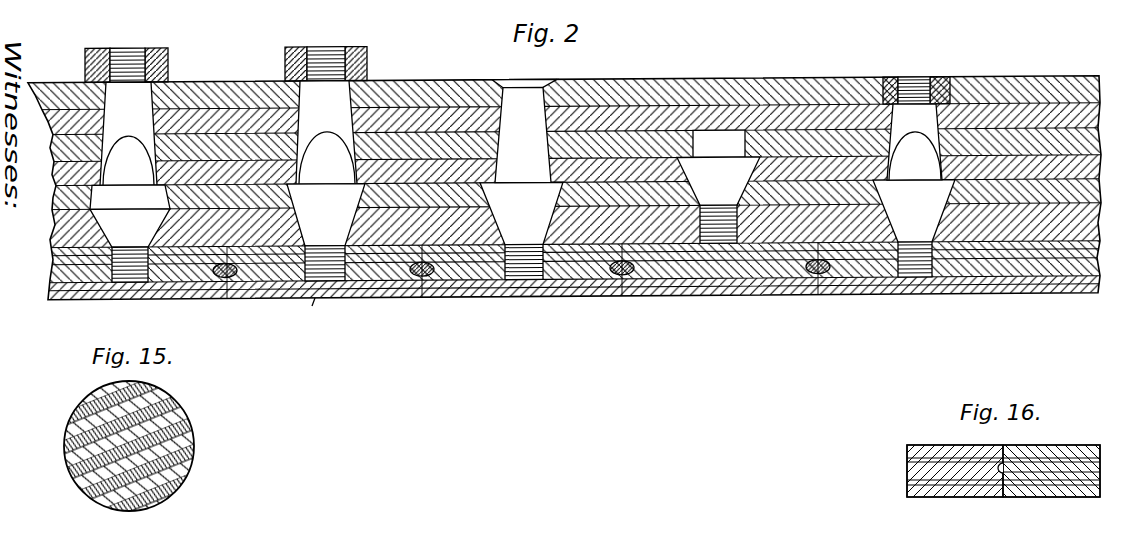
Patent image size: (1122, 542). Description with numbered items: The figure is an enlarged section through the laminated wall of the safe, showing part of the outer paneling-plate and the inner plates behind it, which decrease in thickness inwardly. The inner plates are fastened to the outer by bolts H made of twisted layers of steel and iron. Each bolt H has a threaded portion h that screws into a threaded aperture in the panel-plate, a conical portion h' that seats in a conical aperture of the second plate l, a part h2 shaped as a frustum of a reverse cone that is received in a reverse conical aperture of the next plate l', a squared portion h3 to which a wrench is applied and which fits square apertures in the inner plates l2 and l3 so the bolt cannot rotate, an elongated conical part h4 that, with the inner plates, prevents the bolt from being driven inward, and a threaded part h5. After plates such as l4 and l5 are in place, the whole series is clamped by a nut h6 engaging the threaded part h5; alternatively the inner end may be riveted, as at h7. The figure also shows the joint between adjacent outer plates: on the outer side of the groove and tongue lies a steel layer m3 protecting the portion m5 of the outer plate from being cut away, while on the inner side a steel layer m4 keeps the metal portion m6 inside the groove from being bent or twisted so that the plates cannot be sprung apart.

In FIG. 2, the bolt H is at (142, 47).
In FIG. 15, the bolt H is at (90, 421).
In FIG. 2, the threaded portion h is at (522, 262).
In FIG. 2, the conical portion h' is at (522, 214).
In FIG. 2, the frustum of a reverse cone h2 is at (130, 197).
In FIG. 2, the squared portion h3 is at (522, 157).
In FIG. 2, the elongated conical part h4 is at (228, 133).
In FIG. 2, the threaded part h5 is at (227, 65).
In FIG. 2, the nut h6 is at (168, 64).
In FIG. 2, the riveted end h7 is at (523, 90).
In FIG. 2, the second plate l is at (562, 225).
In FIG. 2, the next plate l' is at (562, 194).
In FIG. 2, the inner plate l2 is at (562, 170).
In FIG. 2, the inner plate l3 is at (562, 145).
In FIG. 2, the inner plate l4 is at (562, 119).
In FIG. 2, the inner plate l5 is at (562, 93).
In FIG. 2, the outer steel layer m3 is at (316, 308).
In FIG. 2, the inner steel layer m4 is at (265, 300).
In FIG. 2, the outer plate portion outside the groove m5 is at (521, 270).
In FIG. 2, the plate portion inside the groove m6 is at (562, 261).